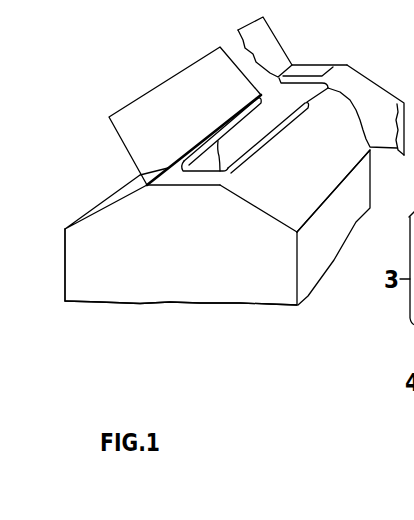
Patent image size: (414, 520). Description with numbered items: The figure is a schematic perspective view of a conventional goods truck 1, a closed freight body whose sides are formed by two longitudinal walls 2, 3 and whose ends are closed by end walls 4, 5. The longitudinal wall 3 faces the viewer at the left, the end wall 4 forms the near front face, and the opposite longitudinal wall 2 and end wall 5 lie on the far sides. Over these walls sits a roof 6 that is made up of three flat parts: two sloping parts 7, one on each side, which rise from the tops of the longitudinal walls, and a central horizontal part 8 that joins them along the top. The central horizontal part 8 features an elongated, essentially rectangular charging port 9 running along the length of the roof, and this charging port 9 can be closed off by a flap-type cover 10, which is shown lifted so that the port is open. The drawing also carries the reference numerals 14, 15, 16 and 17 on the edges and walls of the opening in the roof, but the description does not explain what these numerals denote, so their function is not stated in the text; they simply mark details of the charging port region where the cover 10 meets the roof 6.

The goods truck 1 is at (336, 270).
The longitudinal wall 2 is at (347, 217).
The longitudinal wall 3 is at (65, 259).
The end wall 4 is at (149, 286).
The end wall 5 is at (388, 128).
The roof 6 is at (369, 70).
The sloping part 7 is at (126, 182).
The central horizontal part 8 is at (270, 134).
The charging port 9 is at (305, 87).
The flap-type cover 10 is at (175, 92).
The groove wall 14 is at (257, 139).
The groove wall 15 is at (237, 125).
The groove 16 is at (193, 176).
The ridge edge 17 is at (221, 180).